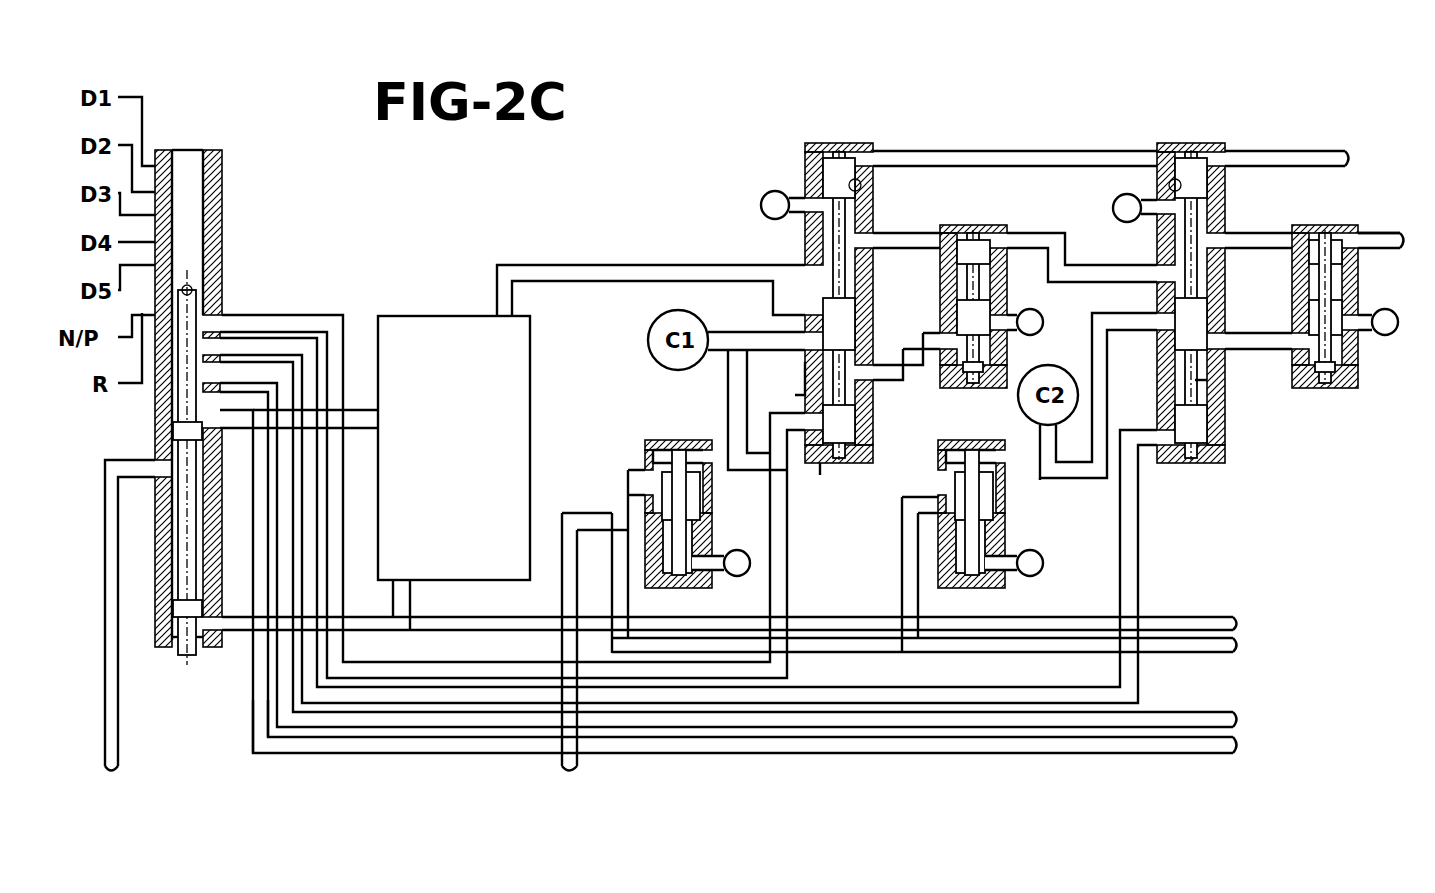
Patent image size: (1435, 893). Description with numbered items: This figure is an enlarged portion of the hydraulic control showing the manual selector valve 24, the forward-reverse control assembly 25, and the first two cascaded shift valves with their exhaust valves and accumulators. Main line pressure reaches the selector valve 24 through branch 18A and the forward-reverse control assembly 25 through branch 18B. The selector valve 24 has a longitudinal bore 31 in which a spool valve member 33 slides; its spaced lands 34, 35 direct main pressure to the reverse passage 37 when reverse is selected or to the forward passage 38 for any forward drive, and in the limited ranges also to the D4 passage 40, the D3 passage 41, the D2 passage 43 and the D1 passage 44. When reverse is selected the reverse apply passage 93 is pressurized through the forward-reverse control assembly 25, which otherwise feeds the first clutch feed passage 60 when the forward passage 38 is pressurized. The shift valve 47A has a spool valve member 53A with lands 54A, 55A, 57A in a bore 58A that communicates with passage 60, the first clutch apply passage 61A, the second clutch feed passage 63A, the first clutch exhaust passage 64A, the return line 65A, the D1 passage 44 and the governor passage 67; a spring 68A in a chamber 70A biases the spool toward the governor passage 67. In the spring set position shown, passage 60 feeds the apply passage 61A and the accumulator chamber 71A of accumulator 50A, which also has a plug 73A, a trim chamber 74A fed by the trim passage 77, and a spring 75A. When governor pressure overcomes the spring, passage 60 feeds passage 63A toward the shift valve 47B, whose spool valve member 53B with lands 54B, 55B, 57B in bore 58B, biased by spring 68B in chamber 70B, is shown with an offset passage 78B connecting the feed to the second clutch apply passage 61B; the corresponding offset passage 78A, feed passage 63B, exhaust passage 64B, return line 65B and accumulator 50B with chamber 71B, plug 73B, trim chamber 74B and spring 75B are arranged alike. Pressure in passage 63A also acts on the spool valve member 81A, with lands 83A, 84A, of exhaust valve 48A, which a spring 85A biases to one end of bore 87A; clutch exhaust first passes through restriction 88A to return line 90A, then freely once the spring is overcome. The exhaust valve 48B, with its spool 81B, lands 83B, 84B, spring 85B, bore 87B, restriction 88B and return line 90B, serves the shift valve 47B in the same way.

The manual selector valve 24 is at (230, 208).
The longitudinal bore 31 is at (198, 162).
The spool valve member 33 is at (200, 297).
The land 34 is at (185, 607).
The land 35 is at (185, 430).
The forward-reverse control assembly 25 is at (454, 448).
The reverse passage 37 is at (410, 605).
The forward passage 38 is at (362, 415).
The D4 passage 40 is at (258, 705).
The D2 passage 43 is at (305, 676).
The D1 passage 44 is at (787, 590).
The branch of main line pressure conduit 18A is at (118, 745).
The branch of main line pressure conduit 18B is at (548, 515).
The first clutch feed passage 60 is at (550, 265).
The D3 passage 41 is at (1228, 712).
The trim passage 77 is at (1188, 652).
The reverse apply passage 93 is at (1200, 617).
The governor passage 67 is at (962, 152).
The shift valve 47A is at (815, 135).
The shift valve 47B is at (1192, 140).
The exhaust valve 48A is at (985, 222).
The exhaust valve 48B is at (1300, 222).
The accumulator 50A is at (655, 438).
The accumulator 50B is at (1012, 515).
The spool valve member 53A is at (848, 160).
The spool valve member 53B is at (1200, 160).
The land 54A is at (823, 178).
The land 54B is at (1185, 160).
The land 55A is at (823, 262).
The land 55B is at (1175, 262).
The land 57A is at (800, 385).
The land 57B is at (1200, 395).
The bore 58A is at (862, 178).
The bore 58B is at (1172, 178).
The first clutch apply passage 61A is at (722, 372).
The second clutch apply passage 61B is at (1065, 475).
The second clutch feed passage 63A is at (1062, 233).
The clutch feed passage 63B is at (1380, 230).
The first clutch exhaust passage 64A is at (915, 260).
The clutch exhaust passage 64B is at (1262, 275).
The hydraulic fluid return line 65A is at (762, 200).
The hydraulic fluid return line 65B is at (1122, 195).
The spring 68A is at (840, 468).
The spring 68B is at (1160, 480).
The chamber 70A is at (845, 445).
The chamber 70B is at (1205, 445).
The accumulator chamber 71A is at (695, 445).
The accumulator chamber 71B is at (958, 445).
The plug 73A is at (665, 495).
The plug 73B is at (985, 490).
The trim chamber 74A is at (660, 480).
The trim chamber 74B is at (955, 485).
The spring 75A is at (720, 560).
The spring 75B is at (1020, 570).
The offset passage 78A is at (778, 306).
The offset passage 78B is at (1100, 330).
The spool valve member 81A is at (992, 245).
The spool valve member 81B is at (1355, 145).
The land 83A is at (990, 255).
The land 83B is at (1330, 245).
The land 84A is at (995, 318).
The land 84B is at (1365, 250).
The spring 85A is at (960, 375).
The spring 85B is at (1325, 380).
The bore 87A is at (962, 240).
The bore 87B is at (1312, 245).
The restriction 88A is at (933, 360).
The restriction 88B is at (1268, 352).
The hydraulic fluid return line 90A is at (1035, 322).
The hydraulic fluid return line 90B is at (1385, 340).